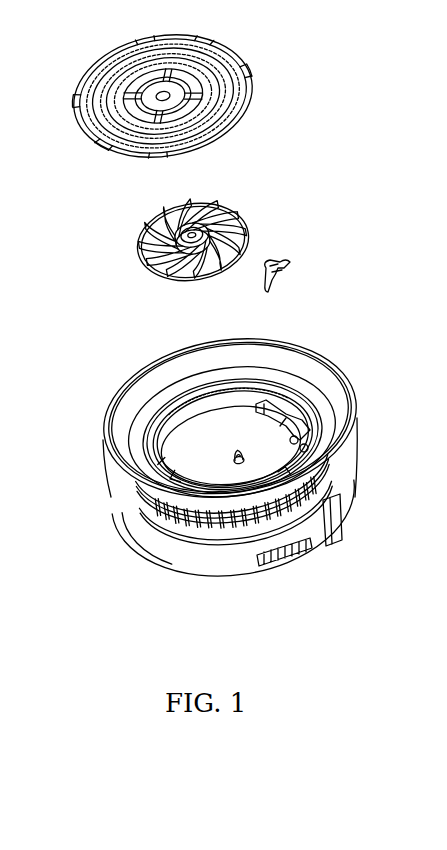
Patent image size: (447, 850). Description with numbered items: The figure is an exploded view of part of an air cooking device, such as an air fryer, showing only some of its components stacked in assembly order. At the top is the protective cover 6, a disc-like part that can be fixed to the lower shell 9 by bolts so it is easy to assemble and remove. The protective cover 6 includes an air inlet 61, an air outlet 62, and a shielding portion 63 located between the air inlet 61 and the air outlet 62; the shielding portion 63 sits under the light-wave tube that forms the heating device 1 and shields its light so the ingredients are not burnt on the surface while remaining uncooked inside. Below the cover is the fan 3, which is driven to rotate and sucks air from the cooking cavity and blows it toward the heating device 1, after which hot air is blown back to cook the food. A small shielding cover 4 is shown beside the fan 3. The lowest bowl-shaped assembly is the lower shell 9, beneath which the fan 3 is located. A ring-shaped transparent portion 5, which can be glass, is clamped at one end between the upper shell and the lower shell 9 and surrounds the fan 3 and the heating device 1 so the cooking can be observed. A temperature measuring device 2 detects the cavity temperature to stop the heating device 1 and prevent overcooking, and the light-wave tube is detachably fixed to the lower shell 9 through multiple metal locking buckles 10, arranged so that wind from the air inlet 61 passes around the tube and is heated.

The heating device 1 is at (173, 432).
The temperature measuring device 2 is at (307, 431).
The fan 3 is at (246, 231).
The shielding cover 4 is at (278, 285).
The transparent portion 5 is at (299, 374).
The protective cover 6 is at (236, 56).
The lower shell 9 is at (308, 399).
The metal locking buckle 10 is at (137, 493).
The air inlet 61 is at (108, 143).
The air outlet 62 is at (90, 75).
The shielding portion 63 is at (240, 120).